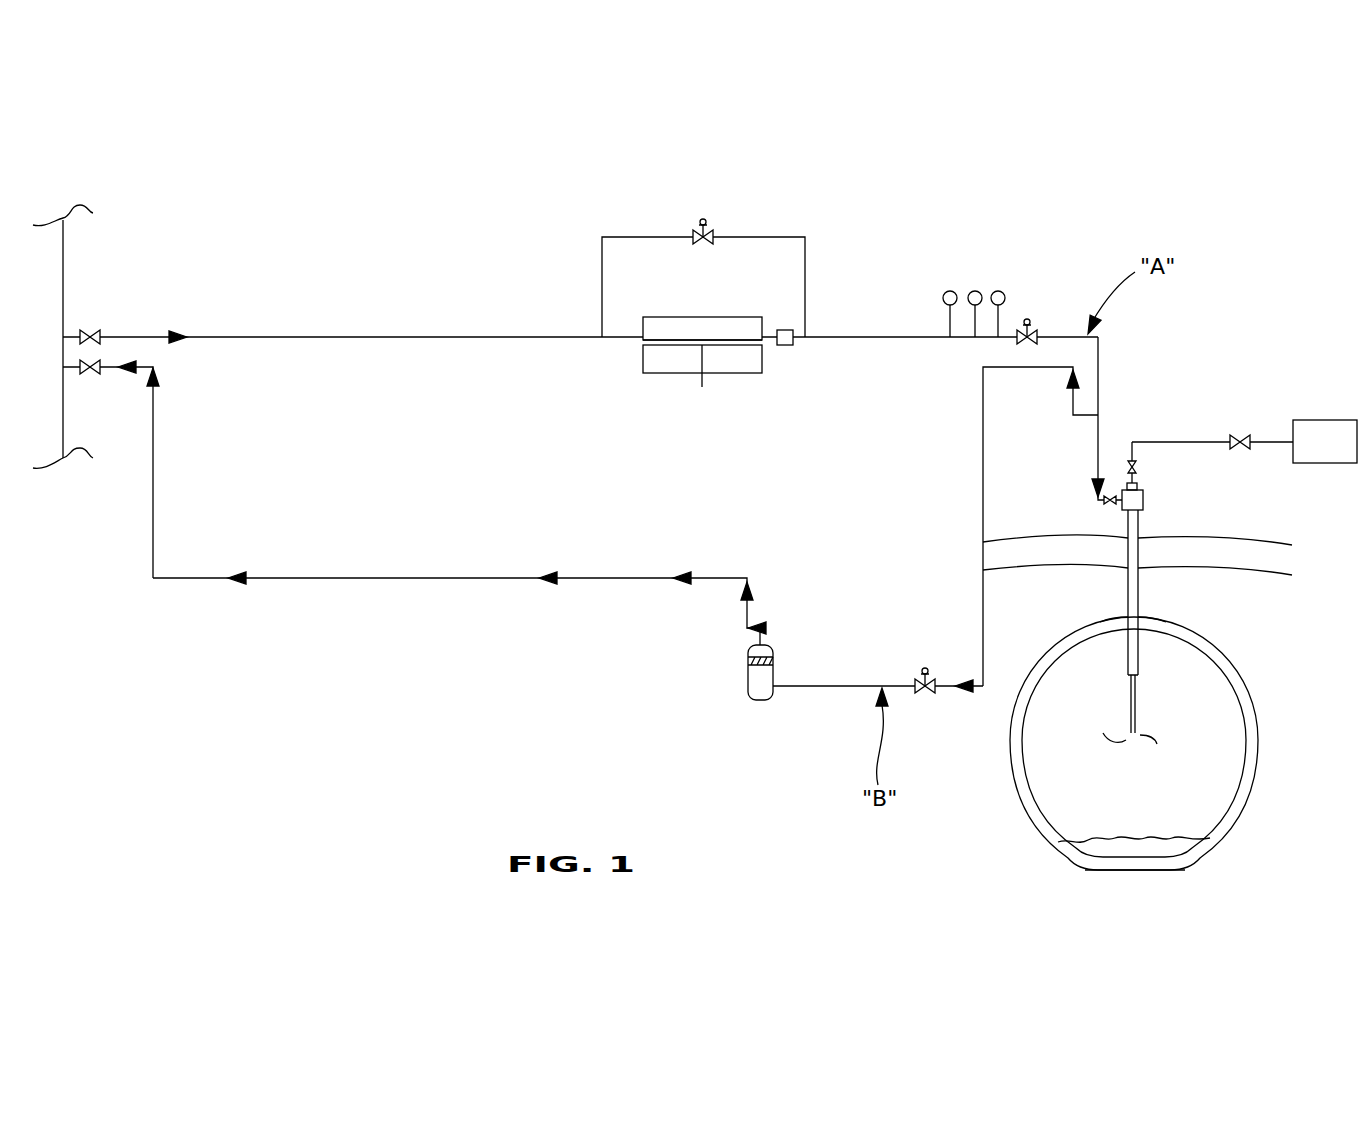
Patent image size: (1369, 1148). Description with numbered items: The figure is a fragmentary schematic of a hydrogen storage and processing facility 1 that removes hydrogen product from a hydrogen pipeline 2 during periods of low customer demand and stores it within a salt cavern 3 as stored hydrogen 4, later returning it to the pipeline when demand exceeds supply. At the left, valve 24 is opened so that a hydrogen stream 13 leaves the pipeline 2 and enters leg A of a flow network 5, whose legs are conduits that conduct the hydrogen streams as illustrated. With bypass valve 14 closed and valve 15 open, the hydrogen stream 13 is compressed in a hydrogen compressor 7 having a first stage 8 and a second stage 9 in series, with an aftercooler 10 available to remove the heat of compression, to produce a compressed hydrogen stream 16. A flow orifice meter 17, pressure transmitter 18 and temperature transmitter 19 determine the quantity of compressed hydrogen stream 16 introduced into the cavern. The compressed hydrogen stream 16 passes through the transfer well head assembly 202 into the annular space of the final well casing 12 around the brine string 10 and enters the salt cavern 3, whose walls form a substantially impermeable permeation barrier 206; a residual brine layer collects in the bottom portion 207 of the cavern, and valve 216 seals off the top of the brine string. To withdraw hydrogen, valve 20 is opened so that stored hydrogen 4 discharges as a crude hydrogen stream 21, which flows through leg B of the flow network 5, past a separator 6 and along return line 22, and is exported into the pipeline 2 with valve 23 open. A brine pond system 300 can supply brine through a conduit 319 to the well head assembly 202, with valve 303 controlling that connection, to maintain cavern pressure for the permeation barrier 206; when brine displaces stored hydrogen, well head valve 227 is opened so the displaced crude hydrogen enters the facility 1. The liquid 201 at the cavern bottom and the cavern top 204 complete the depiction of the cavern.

The hydrogen storage and processing facility 1 is at (785, 145).
The hydrogen pipeline 2 is at (63, 232).
The salt cavern 3 is at (1290, 772).
The stored hydrogen 4 is at (1165, 665).
The flow network 5 is at (880, 270).
The separator 6 is at (748, 675).
The hydrogen compressor 7 is at (712, 317).
The first stage 8 is at (656, 360).
The second stage 9 is at (724, 365).
The brine string 10 is at (785, 345).
The final well casing 12 is at (1140, 592).
The hydrogen stream 13 is at (242, 337).
The bypass valve 14 is at (712, 233).
The valve 15 is at (1040, 330).
The compressed hydrogen stream 16 is at (1100, 360).
The flow orifice meter 17 is at (1002, 291).
The pressure transmitter 18 is at (950, 291).
The temperature transmitter 19 is at (975, 291).
The valve 20 is at (925, 700).
The crude hydrogen stream 21 is at (1022, 369).
The return line 22 is at (153, 494).
The valve 23 is at (91, 376).
The valve 24 is at (93, 328).
The liquid 201 is at (1185, 845).
The transfer well head assembly 202 is at (1165, 458).
The tank top 204 is at (1125, 615).
The substantially impermeable permeation barrier 206 is at (1242, 805).
The bottom portion 207 is at (1113, 862).
The valve 216 is at (1140, 470).
The well head valve 227 is at (1112, 490).
The brine pond system 300 is at (1325, 441).
The valve 303 is at (1248, 447).
The conduit 319 is at (1205, 440).